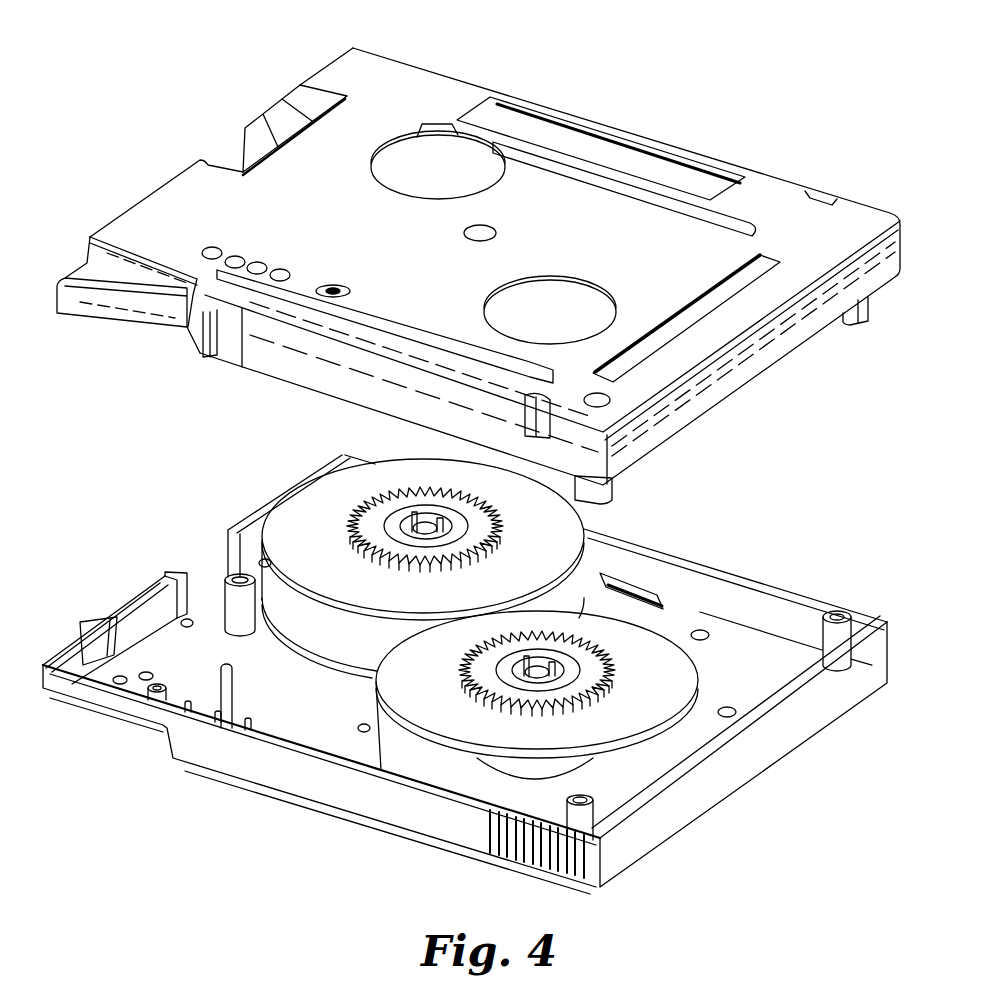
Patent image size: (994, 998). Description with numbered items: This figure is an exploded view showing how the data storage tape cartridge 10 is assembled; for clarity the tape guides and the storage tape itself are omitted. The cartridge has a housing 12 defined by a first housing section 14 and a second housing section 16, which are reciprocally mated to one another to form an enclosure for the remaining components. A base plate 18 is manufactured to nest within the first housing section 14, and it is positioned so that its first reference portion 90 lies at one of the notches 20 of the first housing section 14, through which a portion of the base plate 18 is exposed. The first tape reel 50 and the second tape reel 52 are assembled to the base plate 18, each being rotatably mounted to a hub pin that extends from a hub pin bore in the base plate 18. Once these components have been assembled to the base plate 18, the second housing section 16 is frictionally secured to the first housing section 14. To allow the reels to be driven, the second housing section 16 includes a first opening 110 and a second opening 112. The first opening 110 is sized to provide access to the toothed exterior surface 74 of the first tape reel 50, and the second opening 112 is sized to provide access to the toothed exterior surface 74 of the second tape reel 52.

The data storage tape cartridge 10 is at (574, 64).
The housing 12 is at (160, 571).
The first housing section 14 is at (248, 772).
The second housing section 16 is at (700, 160).
The base plate 18 is at (778, 655).
The notches 20 is at (100, 650).
The first tape reel 50 is at (580, 522).
The second tape reel 52 is at (628, 626).
The toothed exterior surface 74 is at (393, 496).
The first reference portion 90 is at (103, 660).
The first opening 110 is at (426, 193).
The second opening 112 is at (552, 282).